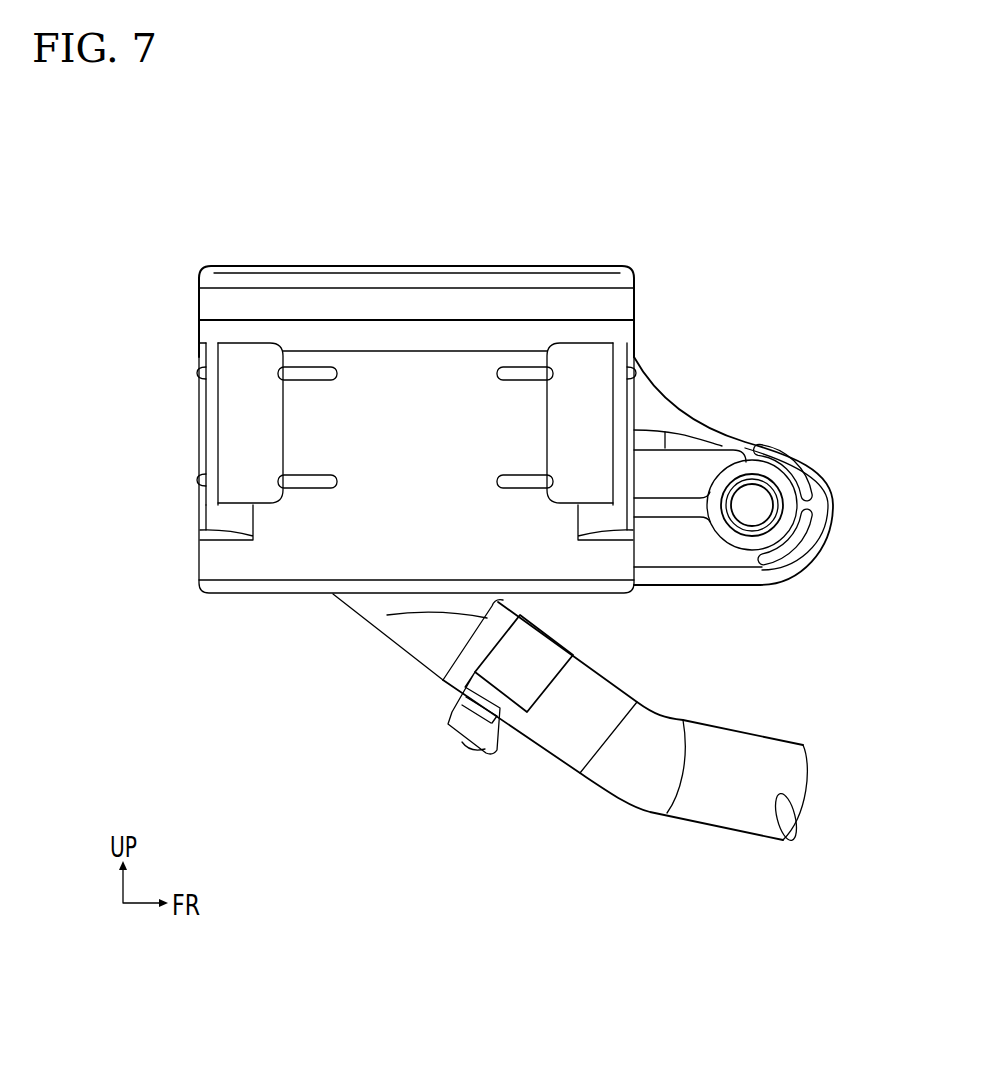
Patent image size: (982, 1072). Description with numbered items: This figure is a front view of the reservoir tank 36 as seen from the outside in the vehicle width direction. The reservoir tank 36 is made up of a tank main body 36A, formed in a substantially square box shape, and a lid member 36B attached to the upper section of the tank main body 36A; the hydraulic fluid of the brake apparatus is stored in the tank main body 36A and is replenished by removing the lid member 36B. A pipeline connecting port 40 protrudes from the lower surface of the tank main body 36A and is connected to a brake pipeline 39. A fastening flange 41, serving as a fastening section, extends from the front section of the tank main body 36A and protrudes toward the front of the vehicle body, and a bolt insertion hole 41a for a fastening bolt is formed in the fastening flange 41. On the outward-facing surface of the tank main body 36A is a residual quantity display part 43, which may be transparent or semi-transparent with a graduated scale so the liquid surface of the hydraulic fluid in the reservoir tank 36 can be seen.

The reservoir tank 36 is at (502, 431).
The tank main body 36A is at (232, 565).
The lid member 36B is at (292, 285).
The brake pipeline 39 is at (619, 777).
The pipeline connecting port 40 is at (446, 652).
The fastening flange 41 is at (712, 558).
The bolt insertion hole 41a is at (752, 488).
The residual quantity display part 43 is at (244, 422).